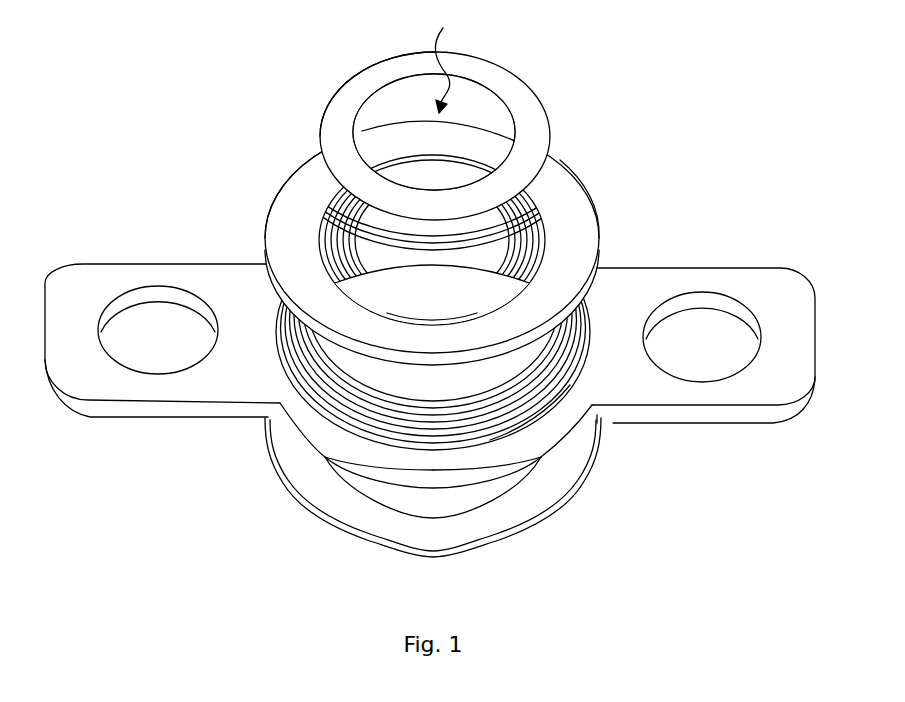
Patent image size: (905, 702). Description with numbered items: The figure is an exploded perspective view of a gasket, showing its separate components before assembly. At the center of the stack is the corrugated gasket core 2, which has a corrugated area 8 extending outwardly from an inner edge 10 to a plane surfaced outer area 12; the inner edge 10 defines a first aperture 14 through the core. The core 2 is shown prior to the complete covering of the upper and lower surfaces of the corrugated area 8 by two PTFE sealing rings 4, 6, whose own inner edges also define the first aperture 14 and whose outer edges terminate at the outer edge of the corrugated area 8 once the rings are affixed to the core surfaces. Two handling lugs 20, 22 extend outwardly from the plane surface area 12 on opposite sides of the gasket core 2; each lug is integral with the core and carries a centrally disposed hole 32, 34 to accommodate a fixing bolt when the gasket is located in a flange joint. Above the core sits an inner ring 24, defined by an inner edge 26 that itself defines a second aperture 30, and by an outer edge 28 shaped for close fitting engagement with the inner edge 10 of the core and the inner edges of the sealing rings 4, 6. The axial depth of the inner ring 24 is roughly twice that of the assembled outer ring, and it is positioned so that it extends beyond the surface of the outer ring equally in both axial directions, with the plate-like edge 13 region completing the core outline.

The corrugated gasket core 2 is at (430, 327).
The PTFE sealing ring 4 is at (444, 244).
The PTFE sealing ring 6 is at (424, 504).
The corrugated area 8 is at (347, 413).
The inner edge 10 is at (452, 257).
The plane surfaced outer area 12 is at (240, 410).
The right plate edge 13 is at (600, 425).
The first aperture 14 is at (418, 303).
The handling lug 20 is at (703, 305).
The handling lug 22 is at (162, 382).
The inner ring 24 is at (430, 168).
The inner edge 26 is at (473, 82).
The outer edge 28 is at (330, 102).
The second aperture 30 is at (451, 59).
The hole 32 is at (692, 347).
The hole 34 is at (143, 340).